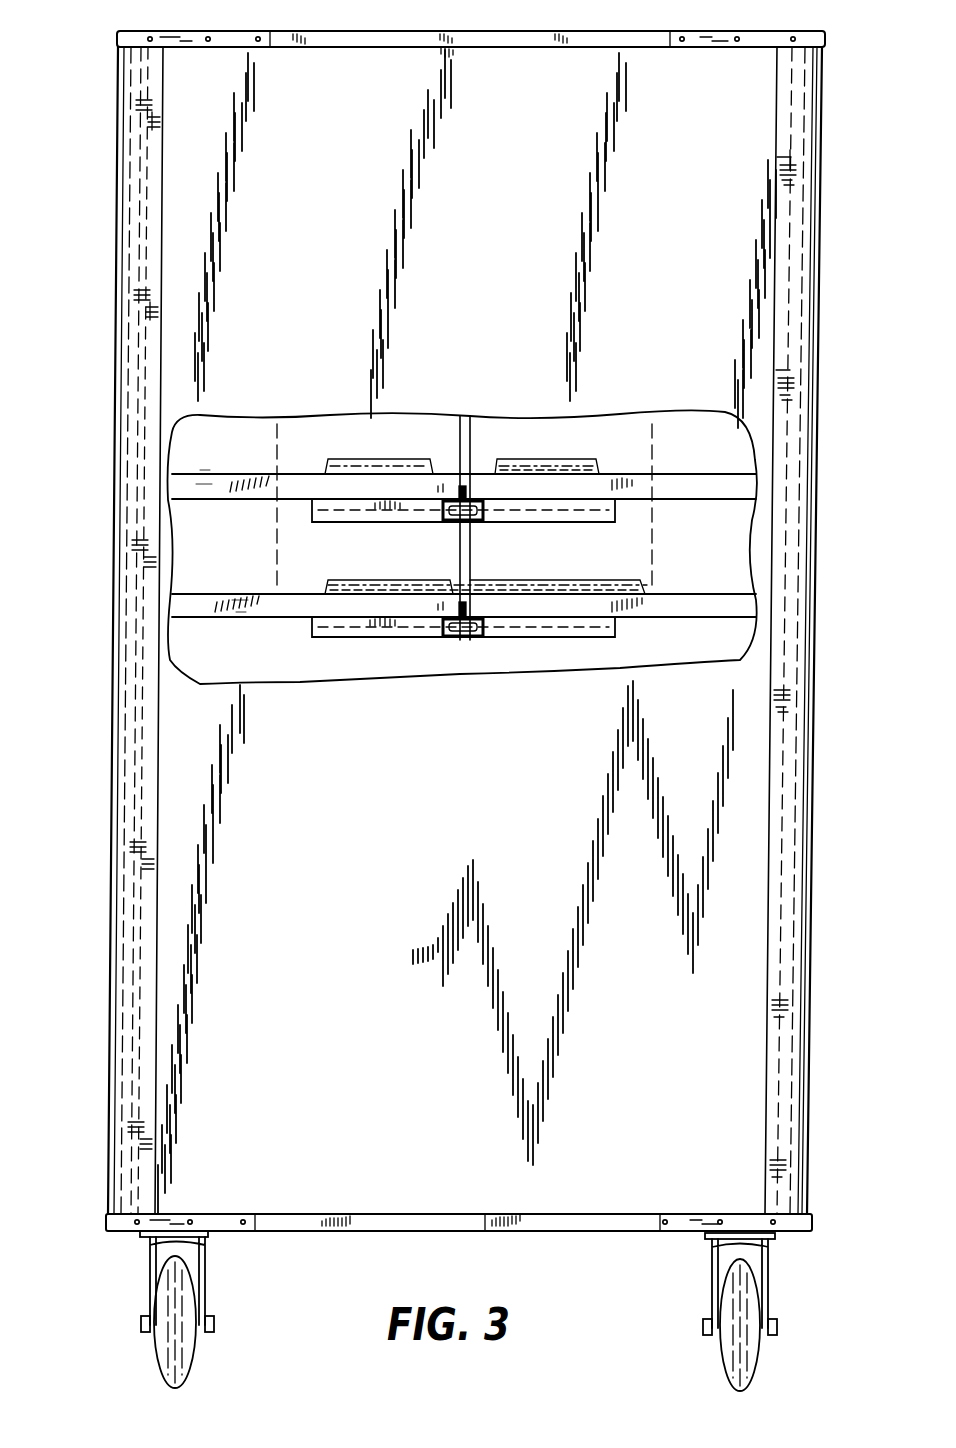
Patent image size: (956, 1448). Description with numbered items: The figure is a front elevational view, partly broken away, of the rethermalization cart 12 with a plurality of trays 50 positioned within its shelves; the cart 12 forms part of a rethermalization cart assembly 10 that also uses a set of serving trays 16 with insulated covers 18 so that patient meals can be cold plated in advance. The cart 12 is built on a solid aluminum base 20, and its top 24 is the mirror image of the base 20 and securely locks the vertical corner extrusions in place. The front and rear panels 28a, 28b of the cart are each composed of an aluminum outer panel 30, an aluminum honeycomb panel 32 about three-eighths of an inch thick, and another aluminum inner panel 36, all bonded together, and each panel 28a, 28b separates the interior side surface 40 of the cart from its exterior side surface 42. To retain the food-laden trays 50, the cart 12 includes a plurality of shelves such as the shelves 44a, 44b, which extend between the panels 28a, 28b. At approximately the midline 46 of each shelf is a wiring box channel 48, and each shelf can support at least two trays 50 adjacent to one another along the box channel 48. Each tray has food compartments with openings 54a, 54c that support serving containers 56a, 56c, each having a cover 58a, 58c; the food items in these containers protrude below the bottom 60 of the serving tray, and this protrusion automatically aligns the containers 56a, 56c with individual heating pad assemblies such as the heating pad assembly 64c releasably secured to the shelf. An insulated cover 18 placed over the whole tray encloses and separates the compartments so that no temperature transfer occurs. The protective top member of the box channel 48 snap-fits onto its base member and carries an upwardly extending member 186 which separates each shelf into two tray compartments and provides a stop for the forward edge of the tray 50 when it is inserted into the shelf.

The cart 10 is at (576, 26).
The rethermalization cart 12 is at (820, 741).
The serving trays 16 is at (464, 464).
The insulated cover 18 is at (645, 421).
The base 20 is at (362, 1232).
The top 24 is at (386, 28).
The front panel 28a is at (122, 292).
The rear panel 28b is at (818, 241).
The aluminum outer panel 30 is at (120, 396).
The aluminum honeycomb panel 32 is at (805, 486).
The aluminum inner panel 36 is at (768, 912).
The interior side surface 40 is at (766, 1081).
The exterior side surface 42 is at (805, 1080).
The shelf 44a is at (240, 607).
The shelf 44b is at (204, 483).
The midline 46 is at (460, 637).
The wiring box channel 48 is at (447, 639).
The trays 50 is at (652, 619).
The opening 54a is at (596, 470).
The opening 54c is at (437, 580).
The serving container 56a is at (500, 460).
The serving container 56c is at (333, 564).
The cover 58a is at (552, 462).
The cover 58c is at (390, 580).
The bottom of the serving tray 60 is at (648, 483).
The heating pad assembly 64c is at (331, 636).
The upwardly extending member 186 is at (460, 477).